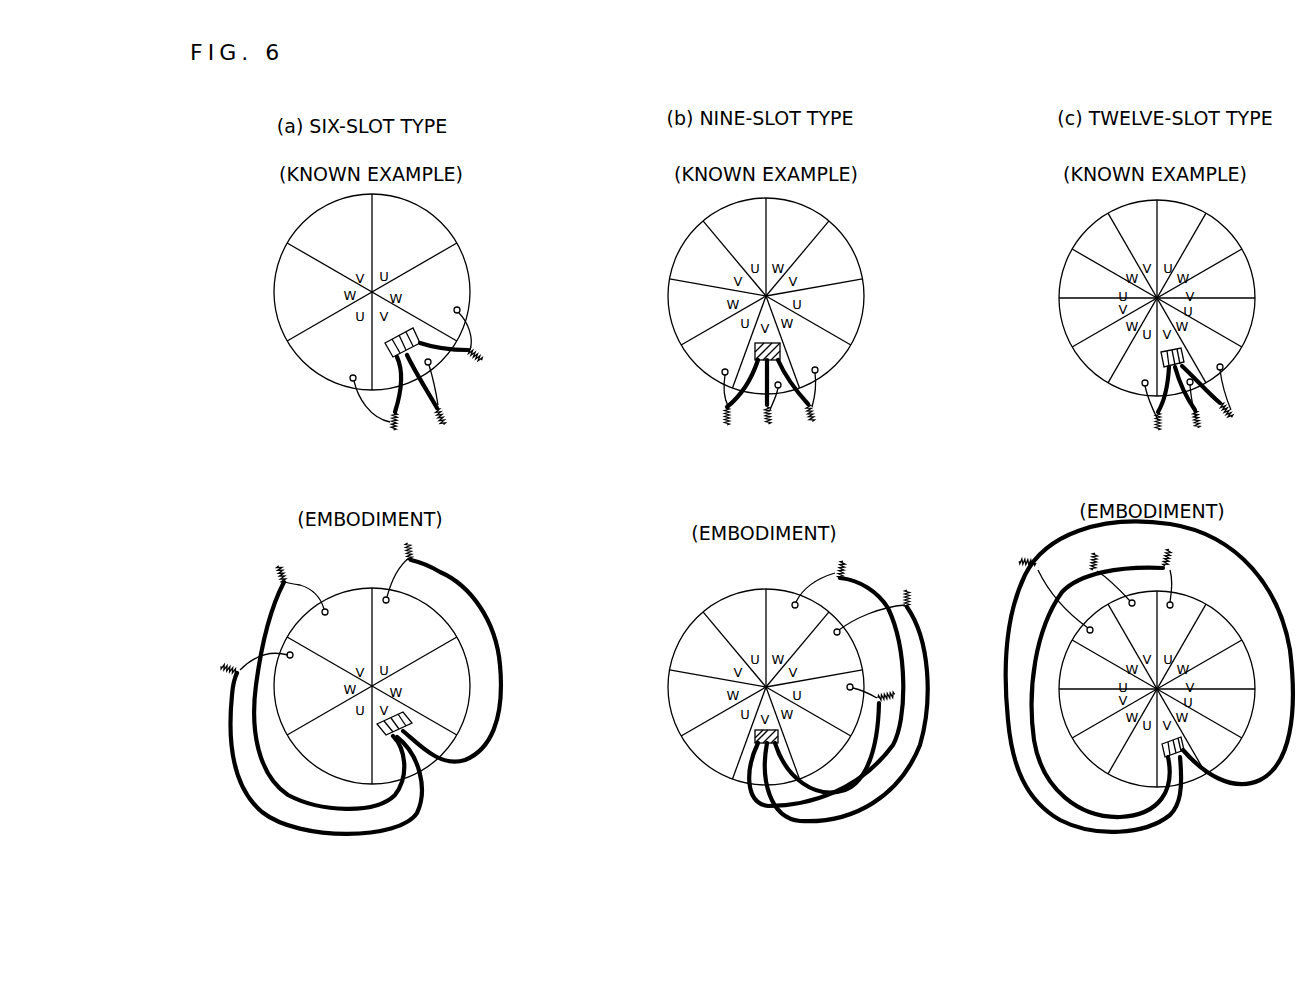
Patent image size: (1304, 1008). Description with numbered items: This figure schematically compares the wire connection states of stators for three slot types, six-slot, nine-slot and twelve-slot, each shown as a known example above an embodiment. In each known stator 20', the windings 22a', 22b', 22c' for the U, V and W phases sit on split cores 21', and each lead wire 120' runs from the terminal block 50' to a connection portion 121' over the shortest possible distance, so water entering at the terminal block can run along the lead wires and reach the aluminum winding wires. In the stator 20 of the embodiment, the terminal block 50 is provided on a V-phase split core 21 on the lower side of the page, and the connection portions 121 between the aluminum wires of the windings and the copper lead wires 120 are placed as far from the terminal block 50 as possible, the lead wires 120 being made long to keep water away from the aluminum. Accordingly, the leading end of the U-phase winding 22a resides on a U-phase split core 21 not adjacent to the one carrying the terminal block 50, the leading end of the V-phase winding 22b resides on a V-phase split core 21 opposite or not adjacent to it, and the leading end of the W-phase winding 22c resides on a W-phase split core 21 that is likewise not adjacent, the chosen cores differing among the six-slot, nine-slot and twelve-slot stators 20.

The stator 20' is at (714, 271).
The split core 21' is at (738, 295).
The terminal block 50' is at (728, 375).
The winding for the U phase 22a' is at (343, 411).
The winding for the V phase 22b' is at (847, 434).
The winding for the W phase 22c' is at (498, 311).
The lead wire 120' is at (827, 413).
The connection portion 121' is at (825, 401).
The stator 20 is at (706, 648).
The split core 21 is at (764, 687).
The terminal block 50 is at (735, 761).
The winding for the U phase 22a is at (796, 533).
The winding for the V phase 22b is at (710, 575).
The winding for the W phase 22c is at (743, 517).
The lead wire 120 is at (744, 678).
The connection portion 121 is at (710, 617).